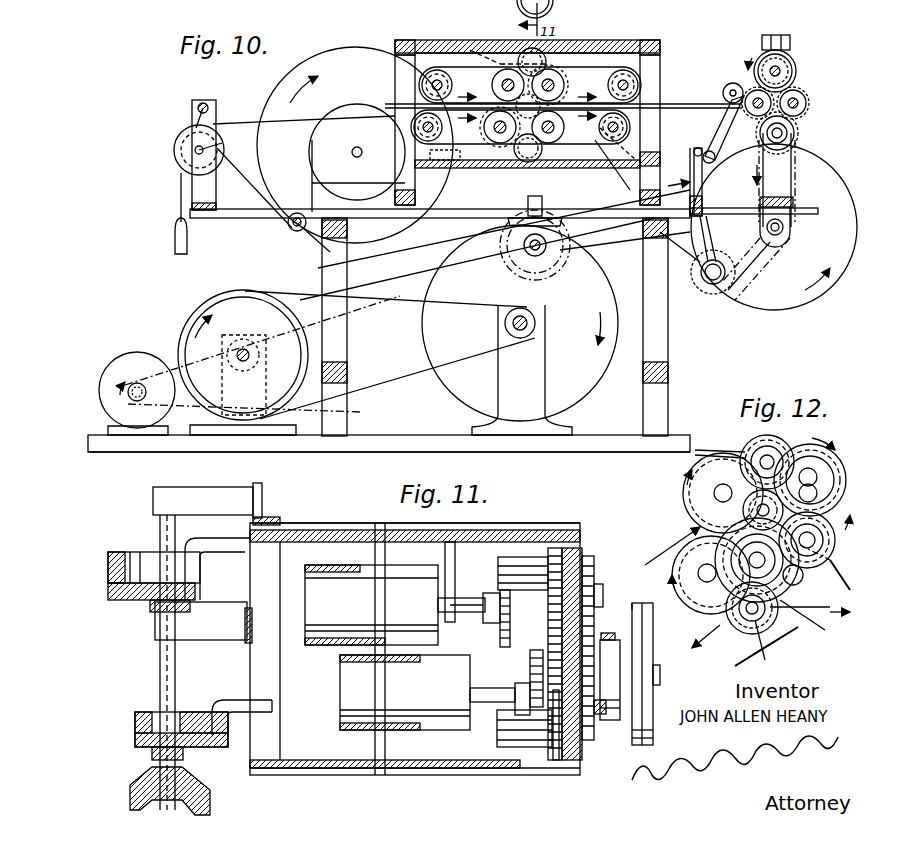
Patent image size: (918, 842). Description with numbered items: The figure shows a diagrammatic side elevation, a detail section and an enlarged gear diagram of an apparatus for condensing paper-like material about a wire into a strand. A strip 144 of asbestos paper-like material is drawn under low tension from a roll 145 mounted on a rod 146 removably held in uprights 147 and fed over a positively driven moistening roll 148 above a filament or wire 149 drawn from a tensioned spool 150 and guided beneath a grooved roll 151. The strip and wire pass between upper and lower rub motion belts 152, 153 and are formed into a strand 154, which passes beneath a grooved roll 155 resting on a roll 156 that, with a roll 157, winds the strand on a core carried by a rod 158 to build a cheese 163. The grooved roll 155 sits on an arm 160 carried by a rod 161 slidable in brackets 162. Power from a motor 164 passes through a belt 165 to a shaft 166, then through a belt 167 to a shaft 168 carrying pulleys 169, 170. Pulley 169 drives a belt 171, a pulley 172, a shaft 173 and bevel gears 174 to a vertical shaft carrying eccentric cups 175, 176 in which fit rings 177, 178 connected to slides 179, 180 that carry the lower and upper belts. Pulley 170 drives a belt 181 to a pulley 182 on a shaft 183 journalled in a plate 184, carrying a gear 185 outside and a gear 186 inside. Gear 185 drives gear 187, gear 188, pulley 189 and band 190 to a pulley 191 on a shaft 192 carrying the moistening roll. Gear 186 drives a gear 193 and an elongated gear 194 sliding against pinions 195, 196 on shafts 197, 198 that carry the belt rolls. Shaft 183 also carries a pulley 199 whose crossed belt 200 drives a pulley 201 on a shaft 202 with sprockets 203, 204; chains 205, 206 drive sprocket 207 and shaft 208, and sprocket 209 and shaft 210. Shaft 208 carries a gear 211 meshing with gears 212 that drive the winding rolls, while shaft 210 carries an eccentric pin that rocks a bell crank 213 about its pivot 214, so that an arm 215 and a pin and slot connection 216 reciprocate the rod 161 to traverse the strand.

In FIG. 10, the strip 144 is at (243, 123).
In FIG. 10, the roll 145 is at (174, 150).
In FIG. 10, the rod 146 is at (222, 143).
In FIG. 10, the uprights 147 is at (197, 111).
In FIG. 10, the moistening roll 148 is at (312, 145).
In FIG. 10, the filament or wire 149 is at (312, 186).
In FIG. 10, the spool 150 is at (180, 170).
In FIG. 10, the grooved roll 151 is at (288, 226).
In FIG. 10, the upper rub motion belts 152 is at (480, 70).
In FIG. 11, the upper rub motion belts 152 is at (392, 570).
In FIG. 10, the lower rub motion belts 153 is at (458, 143).
In FIG. 11, the lower rub motion belts 153 is at (405, 660).
In FIG. 10, the strand 154 is at (672, 102).
In FIG. 10, the grooved roll or wheel 155 is at (726, 88).
In FIG. 10, the roll 156 is at (745, 70).
In FIG. 10, the roll 157 is at (792, 71).
In FIG. 10, the rod 158 is at (778, 70).
In FIG. 10, the arm 160 is at (718, 132).
In FIG. 10, the rod 161 is at (716, 160).
In FIG. 10, the brackets 162 is at (712, 198).
In FIG. 10, the yarn package or cheese 163 is at (785, 45).
In FIG. 10, the motor 164 is at (120, 364).
In FIG. 10, the belt 165 is at (180, 362).
In FIG. 10, the shaft 166 is at (536, 323).
In FIG. 10, the belt 167 is at (405, 378).
In FIG. 10, the shaft 168 is at (238, 358).
In FIG. 10, the pulley 169 is at (308, 352).
In FIG. 10, the pulley 170 is at (260, 352).
In FIG. 10, the belt 171 is at (452, 312).
In FIG. 10, the pulley 172 is at (512, 264).
In FIG. 10, the shaft 173 is at (524, 246).
In FIG. 10, the bevel gears 174 is at (560, 232).
In FIG. 11, the bevel gears 174 is at (205, 785).
In FIG. 11, the eccentric cup 175 is at (135, 722).
In FIG. 11, the eccentric cup 176 is at (108, 565).
In FIG. 11, the ring 177 is at (196, 700).
In FIG. 11, the ring 178 is at (147, 560).
In FIG. 11, the slide 179 is at (300, 760).
In FIG. 10, the slide 180 is at (630, 48).
In FIG. 11, the slide 180 is at (328, 530).
In FIG. 10, the belt 181 is at (316, 265).
In FIG. 11, the belt 181 is at (648, 622).
In FIG. 10, the pulley 182 is at (460, 153).
In FIG. 11, the pulley 182 is at (648, 695).
In FIG. 11, the shaft 183 is at (660, 672).
In FIG. 12, the shaft 183 is at (720, 505).
In FIG. 11, the plate 184 is at (570, 548).
In FIG. 11, the gear 185 is at (600, 714).
In FIG. 12, the gear 185 is at (825, 632).
In FIG. 11, the gear 186 is at (545, 660).
In FIG. 12, the gear 186 is at (740, 554).
In FIG. 11, the gear 187 is at (586, 735).
In FIG. 12, the gear 187 is at (832, 525).
In FIG. 11, the gear 188 is at (588, 556).
In FIG. 12, the gear 188 is at (838, 452).
In FIG. 10, the pulley 189 is at (565, 80).
In FIG. 11, the pulley 189 is at (600, 584).
In FIG. 12, the pulley 189 is at (790, 455).
In FIG. 10, the belt or band 190 is at (490, 55).
In FIG. 12, the belt or band 190 is at (712, 452).
In FIG. 10, the pulley 191 is at (338, 60).
In FIG. 10, the shaft 192 is at (354, 148).
In FIG. 11, the gear 193 is at (553, 752).
In FIG. 12, the gear 193 is at (740, 650).
In FIG. 11, the elongated gear 194 is at (497, 728).
In FIG. 12, the elongated gear 194 is at (770, 647).
In FIG. 11, the pinion 195 is at (532, 666).
In FIG. 12, the pinion 195 is at (722, 628).
In FIG. 12, the pinion 196 is at (797, 587).
In FIG. 11, the shaft 197 is at (497, 682).
In FIG. 12, the shaft 197 is at (690, 572).
In FIG. 12, the shaft 198 is at (790, 572).
In FIG. 11, the pulley 199 is at (612, 640).
In FIG. 12, the pulley 199 is at (812, 580).
In FIG. 10, the crossed belt 200 is at (613, 165).
In FIG. 11, the crossed belt 200 is at (607, 633).
In FIG. 12, the crossed belt 200 is at (828, 610).
In FIG. 10, the pulley 201 is at (790, 306).
In FIG. 10, the shaft 202 is at (784, 226).
In FIG. 10, the sprocket 203 is at (794, 201).
In FIG. 10, the sprocket 204 is at (775, 252).
In FIG. 10, the chain 205 is at (785, 176).
In FIG. 10, the chain 206 is at (762, 265).
In FIG. 10, the sprocket 207 is at (800, 138).
In FIG. 10, the shaft 208 is at (795, 130).
In FIG. 10, the sprocket 209 is at (748, 275).
In FIG. 10, the shaft 210 is at (714, 286).
In FIG. 10, the gear 211 is at (766, 133).
In FIG. 10, the gears 212 is at (808, 100).
In FIG. 10, the bell crank 213 is at (675, 189).
In FIG. 10, the pivot 214 is at (704, 200).
In FIG. 10, the arm 215 is at (690, 165).
In FIG. 10, the pin and slot connection 216 is at (693, 151).